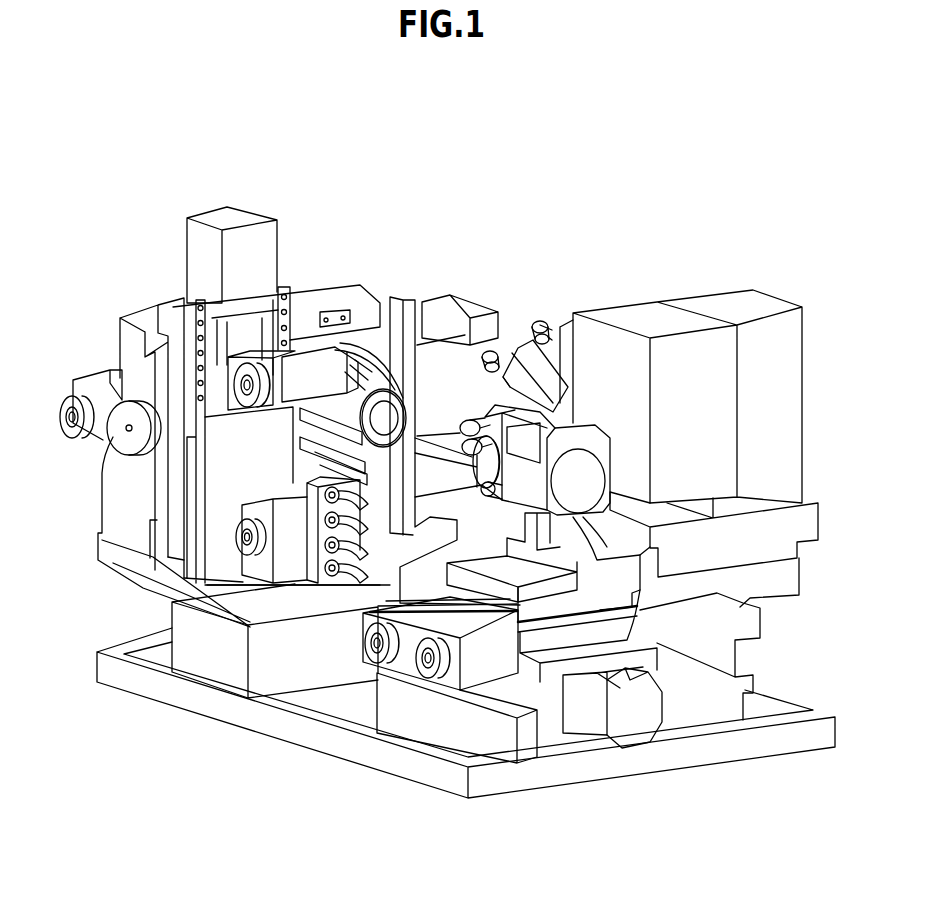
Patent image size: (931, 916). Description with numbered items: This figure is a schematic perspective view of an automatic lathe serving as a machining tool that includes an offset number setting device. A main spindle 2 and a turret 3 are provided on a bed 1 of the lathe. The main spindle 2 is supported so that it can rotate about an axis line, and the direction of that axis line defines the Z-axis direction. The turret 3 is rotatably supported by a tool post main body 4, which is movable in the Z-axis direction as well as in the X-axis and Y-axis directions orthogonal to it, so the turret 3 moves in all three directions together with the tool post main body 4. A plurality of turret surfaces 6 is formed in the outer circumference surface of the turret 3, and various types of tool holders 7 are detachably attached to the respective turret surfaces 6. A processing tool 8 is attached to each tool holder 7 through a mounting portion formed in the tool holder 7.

The bed 1 is at (790, 702).
The main spindle 2 is at (372, 374).
The turret 3 is at (570, 407).
The tool post main body 4 is at (637, 323).
The turret surface 6 is at (540, 360).
The tool holder 7 is at (518, 355).
The processing tool 8 is at (487, 350).